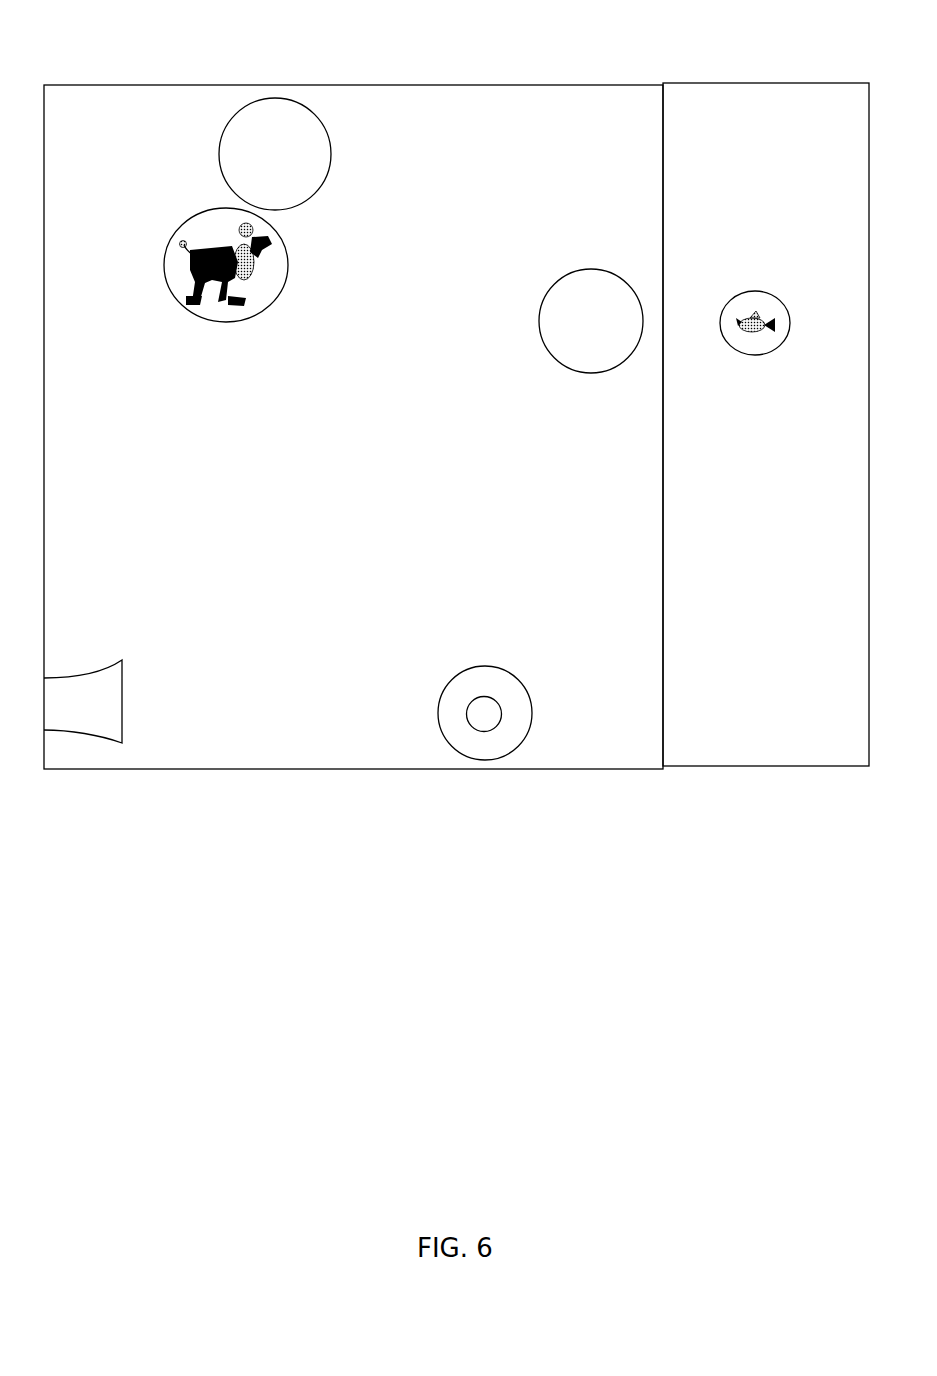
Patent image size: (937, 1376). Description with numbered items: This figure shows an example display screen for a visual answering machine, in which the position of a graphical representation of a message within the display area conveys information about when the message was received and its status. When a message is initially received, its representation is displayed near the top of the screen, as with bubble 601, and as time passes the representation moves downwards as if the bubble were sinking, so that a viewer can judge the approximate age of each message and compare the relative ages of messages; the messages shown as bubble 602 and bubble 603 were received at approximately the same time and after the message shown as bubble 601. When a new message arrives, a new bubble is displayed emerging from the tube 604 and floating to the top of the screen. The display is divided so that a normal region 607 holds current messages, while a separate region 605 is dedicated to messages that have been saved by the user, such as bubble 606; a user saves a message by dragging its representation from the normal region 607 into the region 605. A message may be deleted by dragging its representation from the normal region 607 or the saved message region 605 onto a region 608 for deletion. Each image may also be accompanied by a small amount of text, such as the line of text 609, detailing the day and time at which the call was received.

The bubble 601 is at (332, 150).
The bubble 602 is at (288, 288).
The bubble 603 is at (553, 285).
The tube 604 is at (96, 670).
The region 605 is at (802, 68).
The bubble 606 is at (775, 297).
The normal region 607 is at (425, 73).
The region for deletion 608 is at (517, 747).
The line of text 609 is at (222, 325).